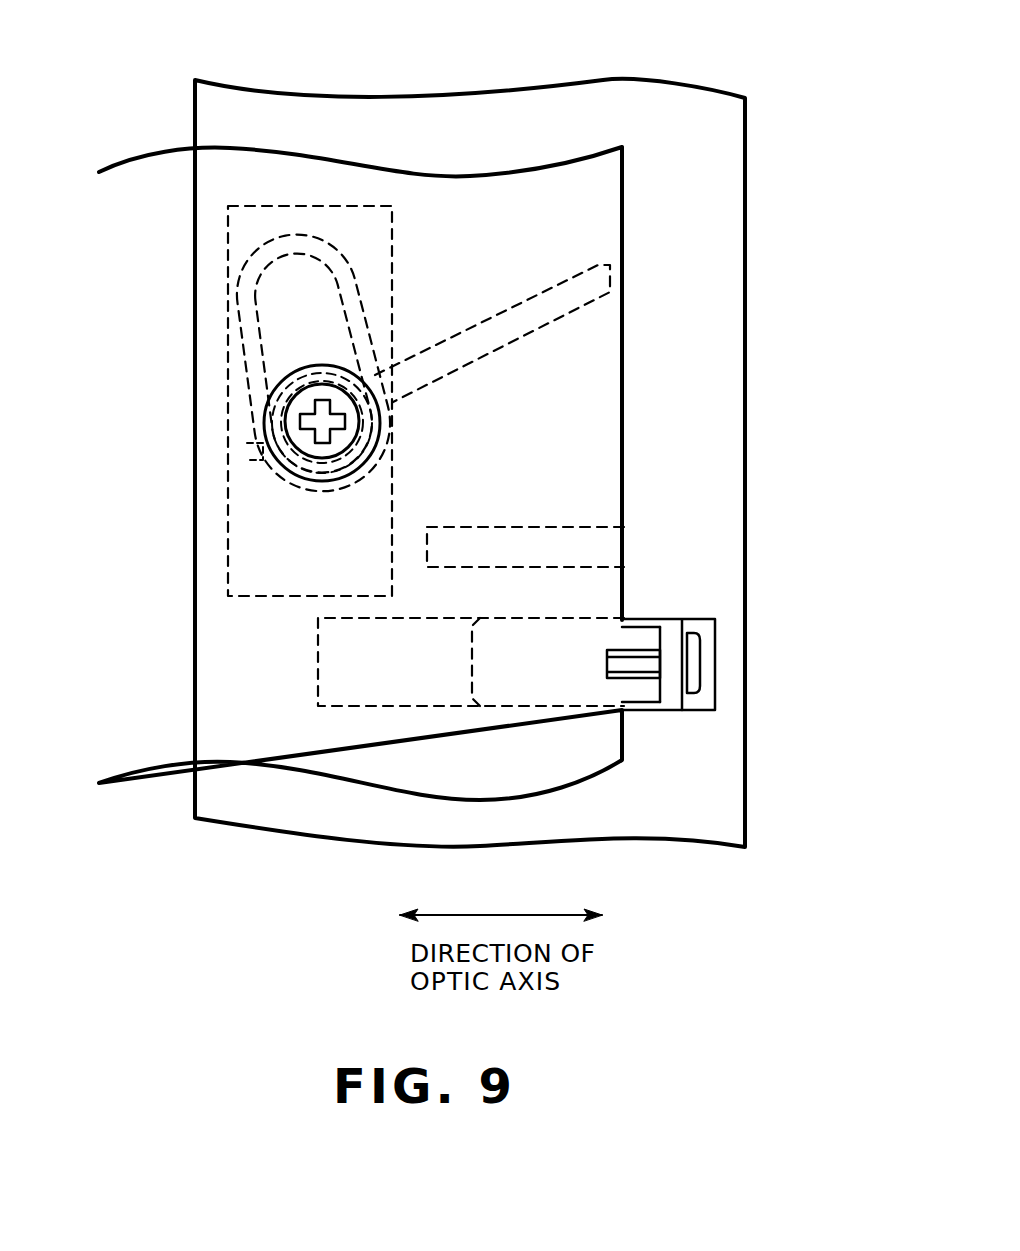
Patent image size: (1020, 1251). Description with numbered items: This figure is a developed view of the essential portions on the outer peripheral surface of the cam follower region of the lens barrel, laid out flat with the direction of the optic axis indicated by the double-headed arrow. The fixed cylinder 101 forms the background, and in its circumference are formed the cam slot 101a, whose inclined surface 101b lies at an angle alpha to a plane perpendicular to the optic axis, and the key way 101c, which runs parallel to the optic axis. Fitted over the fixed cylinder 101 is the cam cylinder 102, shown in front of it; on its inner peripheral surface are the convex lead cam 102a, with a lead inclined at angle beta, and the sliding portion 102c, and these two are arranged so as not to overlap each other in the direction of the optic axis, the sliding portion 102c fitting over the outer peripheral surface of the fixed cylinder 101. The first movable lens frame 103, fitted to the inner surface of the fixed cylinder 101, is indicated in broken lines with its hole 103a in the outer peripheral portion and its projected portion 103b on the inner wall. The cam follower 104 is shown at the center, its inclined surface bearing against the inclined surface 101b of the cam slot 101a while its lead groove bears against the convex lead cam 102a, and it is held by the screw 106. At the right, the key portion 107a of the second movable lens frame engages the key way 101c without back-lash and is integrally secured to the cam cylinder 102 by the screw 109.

The fixed cylinder 101 is at (662, 80).
The cam slot 101a is at (372, 282).
The inclined surface 101b is at (243, 345).
The key way 101c is at (445, 707).
The cam cylinder 102 is at (625, 303).
The convex lead cam 102a is at (493, 342).
The sliding portion 102c is at (556, 540).
The first movable lens frame 103 is at (226, 548).
The hole 103a is at (314, 470).
The projected portion 103b is at (366, 428).
The cam follower 104 is at (316, 370).
The screw 106 is at (295, 435).
The key portion 107a is at (673, 637).
The screw 109 is at (693, 678).